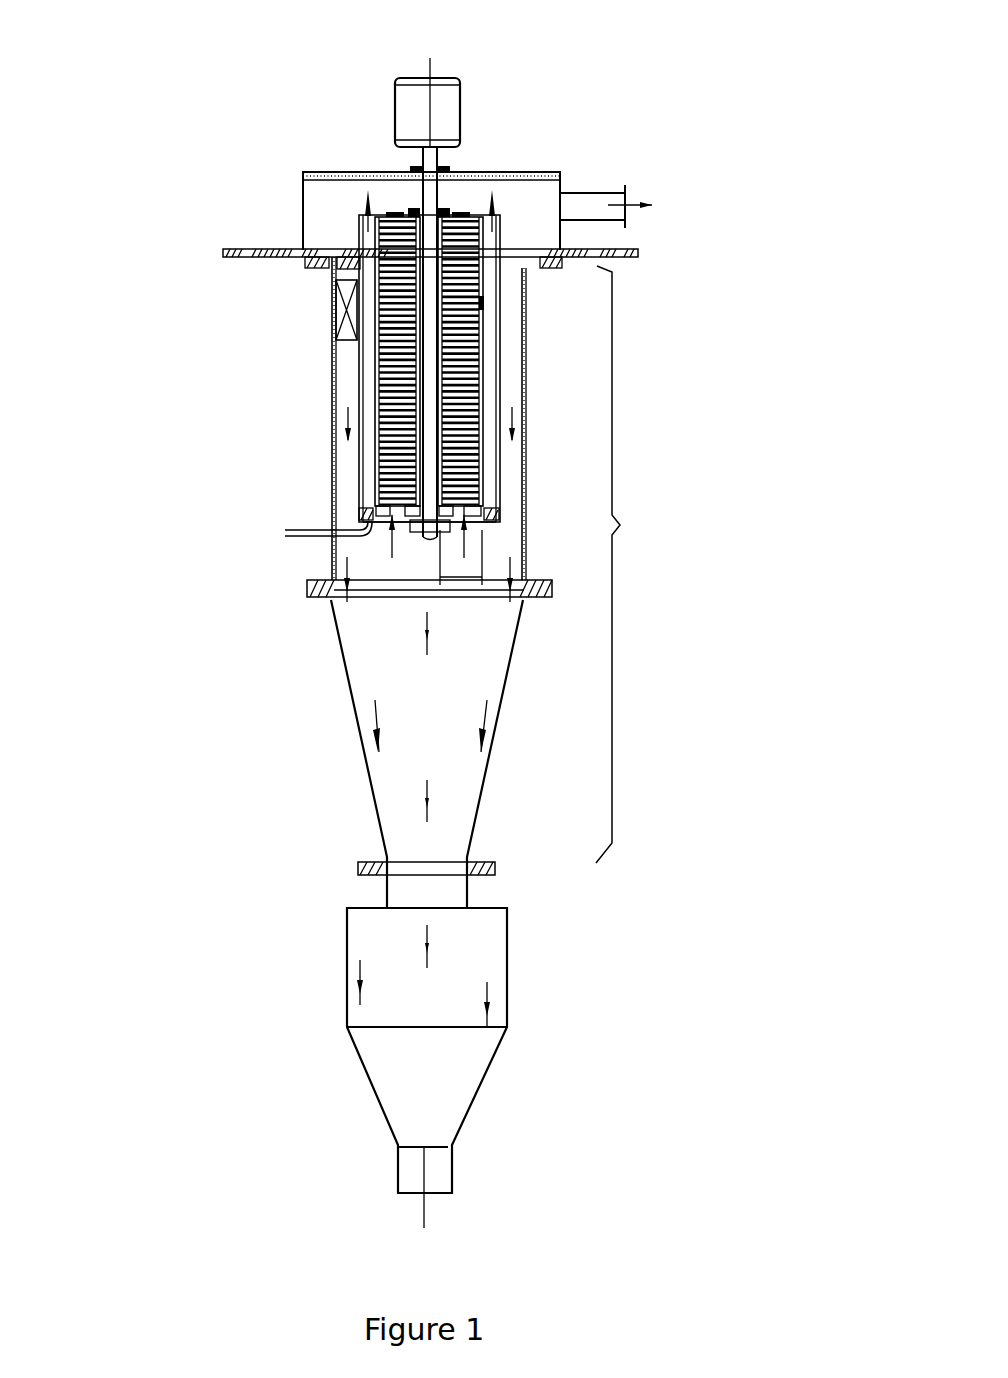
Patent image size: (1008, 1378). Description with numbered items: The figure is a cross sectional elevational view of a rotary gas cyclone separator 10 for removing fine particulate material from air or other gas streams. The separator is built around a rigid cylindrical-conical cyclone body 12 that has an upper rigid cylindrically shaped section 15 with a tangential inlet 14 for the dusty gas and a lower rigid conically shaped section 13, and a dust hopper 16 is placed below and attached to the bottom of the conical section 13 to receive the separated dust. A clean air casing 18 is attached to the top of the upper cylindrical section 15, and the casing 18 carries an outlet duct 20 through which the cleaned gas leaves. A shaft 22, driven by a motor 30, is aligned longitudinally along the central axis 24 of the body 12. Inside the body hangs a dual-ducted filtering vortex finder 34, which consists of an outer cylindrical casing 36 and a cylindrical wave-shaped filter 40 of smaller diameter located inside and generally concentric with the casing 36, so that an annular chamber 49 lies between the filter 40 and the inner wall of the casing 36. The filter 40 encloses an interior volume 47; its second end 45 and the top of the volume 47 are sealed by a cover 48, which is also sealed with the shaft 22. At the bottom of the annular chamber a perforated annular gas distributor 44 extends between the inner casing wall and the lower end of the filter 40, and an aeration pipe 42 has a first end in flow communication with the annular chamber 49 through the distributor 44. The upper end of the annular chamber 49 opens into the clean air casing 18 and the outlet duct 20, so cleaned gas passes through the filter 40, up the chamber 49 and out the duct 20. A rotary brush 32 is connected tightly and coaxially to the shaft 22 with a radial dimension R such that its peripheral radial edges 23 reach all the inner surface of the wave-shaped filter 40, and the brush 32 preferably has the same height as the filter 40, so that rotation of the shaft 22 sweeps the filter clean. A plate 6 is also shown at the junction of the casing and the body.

The flange plate 6 is at (638, 252).
The rotary gas cyclone separator 10 is at (467, 634).
The cyclone body 12 is at (626, 564).
The lower rigid conically shaped section 13 is at (352, 705).
The tangential inlet 14 is at (337, 316).
The upper rigid cylindrically shaped section 15 is at (335, 378).
The dust hopper 16 is at (507, 975).
The clean air casing 18 is at (560, 182).
The outlet duct 20 is at (613, 192).
The shaft 22 is at (425, 162).
The peripheral radial edges 23 is at (375, 478).
The central axis 24 is at (428, 74).
The motor 30 is at (455, 107).
The rotary brush 32 is at (467, 396).
The dual-ducted filtering vortex finder 34 is at (468, 303).
The outer cylindrical casing 36 is at (500, 447).
The cylindrical wave-shaped filter 40 is at (483, 343).
The aeration pipe 42 is at (298, 531).
The perforated annular gas distributor 44 is at (360, 510).
The second end of the cylindrical wave-shaped filter 45 is at (468, 223).
The interior volume 47 is at (478, 302).
The cover 48 is at (400, 218).
The annular chamber 49 is at (367, 262).